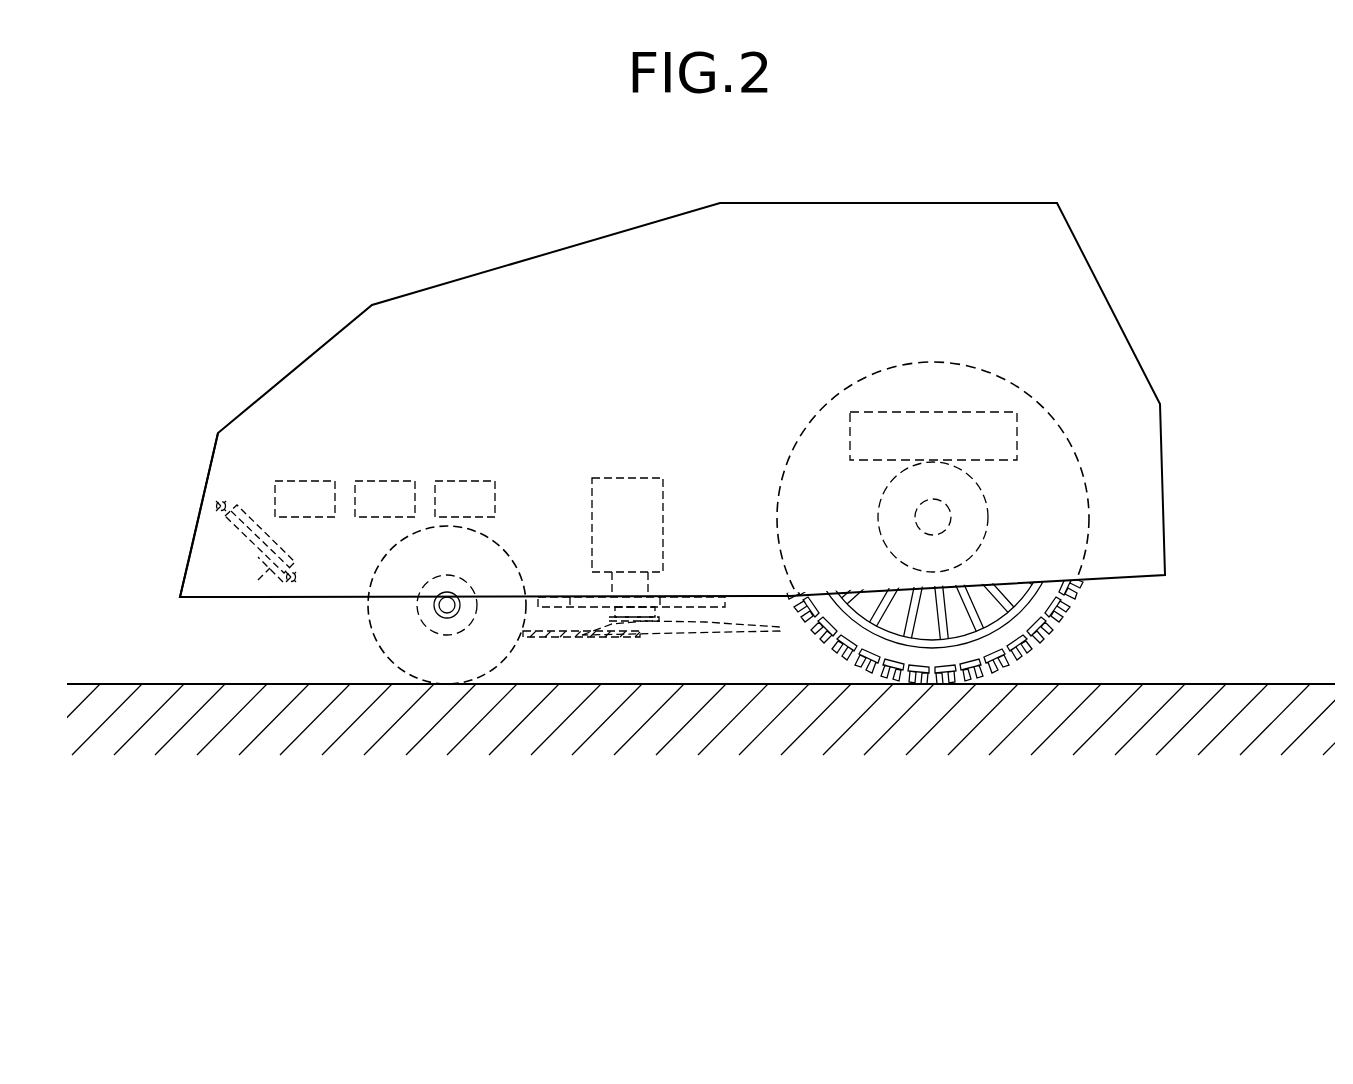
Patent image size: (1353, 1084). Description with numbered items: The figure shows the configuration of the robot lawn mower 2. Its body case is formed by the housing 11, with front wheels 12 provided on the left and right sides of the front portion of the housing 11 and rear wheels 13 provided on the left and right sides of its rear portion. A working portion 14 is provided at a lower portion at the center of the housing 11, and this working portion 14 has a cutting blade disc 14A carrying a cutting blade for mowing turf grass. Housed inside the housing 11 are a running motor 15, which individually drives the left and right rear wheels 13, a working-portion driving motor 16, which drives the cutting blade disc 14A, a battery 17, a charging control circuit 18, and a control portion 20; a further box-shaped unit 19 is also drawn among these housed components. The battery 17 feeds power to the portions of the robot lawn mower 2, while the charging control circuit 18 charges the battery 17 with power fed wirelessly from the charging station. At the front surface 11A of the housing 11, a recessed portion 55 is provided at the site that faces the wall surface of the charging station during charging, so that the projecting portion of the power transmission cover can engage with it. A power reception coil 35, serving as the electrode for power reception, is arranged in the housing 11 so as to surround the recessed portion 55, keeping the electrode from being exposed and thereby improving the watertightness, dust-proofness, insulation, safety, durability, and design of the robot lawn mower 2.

The robot lawn mower 2 is at (278, 250).
The housing 11 is at (556, 248).
The front surface 11A is at (204, 490).
The recessed portion 55 is at (205, 557).
The power reception coil 35 is at (232, 503).
The control unit 19 is at (303, 480).
The charging control circuit 18 is at (385, 480).
The battery 17 is at (465, 480).
The working-portion driving motor 16 is at (592, 518).
The working portion 14 is at (722, 652).
The cutting blade disc 14A is at (580, 638).
The front wheels 12 is at (478, 653).
The rear wheels 13 is at (983, 647).
The running motor 15 is at (988, 505).
The control portion 20 is at (1017, 433).